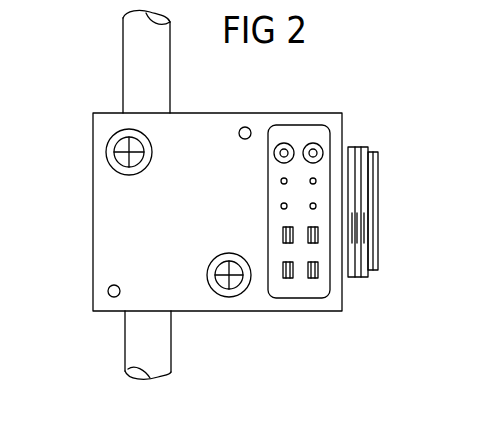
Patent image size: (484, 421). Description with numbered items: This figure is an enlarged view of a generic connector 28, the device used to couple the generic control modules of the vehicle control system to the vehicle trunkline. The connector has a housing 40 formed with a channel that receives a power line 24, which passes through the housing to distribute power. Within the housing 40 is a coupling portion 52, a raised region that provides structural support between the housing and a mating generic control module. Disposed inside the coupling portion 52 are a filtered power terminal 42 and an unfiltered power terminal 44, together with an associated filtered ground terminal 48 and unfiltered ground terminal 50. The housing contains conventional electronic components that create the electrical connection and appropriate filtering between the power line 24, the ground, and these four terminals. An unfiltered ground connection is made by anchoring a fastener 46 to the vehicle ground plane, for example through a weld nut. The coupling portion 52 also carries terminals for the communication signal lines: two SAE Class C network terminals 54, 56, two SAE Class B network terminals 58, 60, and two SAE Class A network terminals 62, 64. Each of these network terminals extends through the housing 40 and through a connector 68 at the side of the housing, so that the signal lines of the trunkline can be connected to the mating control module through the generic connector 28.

The power line 24 is at (123, 78).
The generic connector 28 is at (85, 324).
The housing 40 is at (93, 210).
The filtered power terminal 42 is at (283, 272).
The unfiltered power terminal 44 is at (318, 272).
The fastener 46 is at (229, 297).
The filtered ground terminal 48 is at (283, 240).
The unfiltered ground terminal 50 is at (318, 232).
The coupling portion 52 is at (330, 133).
The SAE Class C network terminal 54 is at (284, 143).
The SAE Class C network terminal 56 is at (313, 143).
The SAE Class B network terminal 58 is at (281, 181).
The SAE Class B network terminal 60 is at (316, 181).
The SAE Class A network terminal 62 is at (281, 206).
The SAE Class A network terminal 64 is at (316, 206).
The connector 68 is at (360, 277).